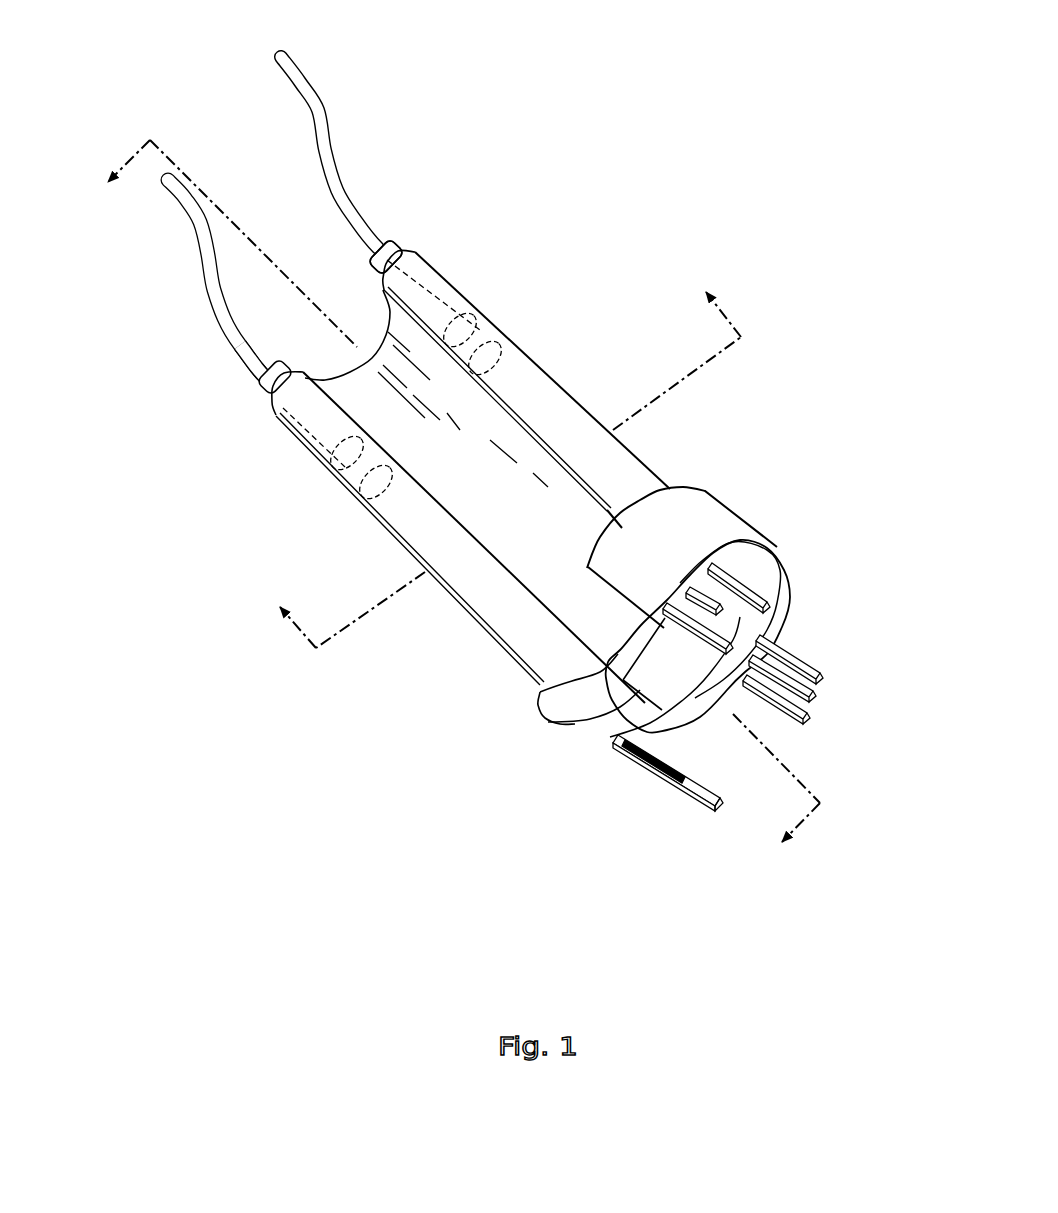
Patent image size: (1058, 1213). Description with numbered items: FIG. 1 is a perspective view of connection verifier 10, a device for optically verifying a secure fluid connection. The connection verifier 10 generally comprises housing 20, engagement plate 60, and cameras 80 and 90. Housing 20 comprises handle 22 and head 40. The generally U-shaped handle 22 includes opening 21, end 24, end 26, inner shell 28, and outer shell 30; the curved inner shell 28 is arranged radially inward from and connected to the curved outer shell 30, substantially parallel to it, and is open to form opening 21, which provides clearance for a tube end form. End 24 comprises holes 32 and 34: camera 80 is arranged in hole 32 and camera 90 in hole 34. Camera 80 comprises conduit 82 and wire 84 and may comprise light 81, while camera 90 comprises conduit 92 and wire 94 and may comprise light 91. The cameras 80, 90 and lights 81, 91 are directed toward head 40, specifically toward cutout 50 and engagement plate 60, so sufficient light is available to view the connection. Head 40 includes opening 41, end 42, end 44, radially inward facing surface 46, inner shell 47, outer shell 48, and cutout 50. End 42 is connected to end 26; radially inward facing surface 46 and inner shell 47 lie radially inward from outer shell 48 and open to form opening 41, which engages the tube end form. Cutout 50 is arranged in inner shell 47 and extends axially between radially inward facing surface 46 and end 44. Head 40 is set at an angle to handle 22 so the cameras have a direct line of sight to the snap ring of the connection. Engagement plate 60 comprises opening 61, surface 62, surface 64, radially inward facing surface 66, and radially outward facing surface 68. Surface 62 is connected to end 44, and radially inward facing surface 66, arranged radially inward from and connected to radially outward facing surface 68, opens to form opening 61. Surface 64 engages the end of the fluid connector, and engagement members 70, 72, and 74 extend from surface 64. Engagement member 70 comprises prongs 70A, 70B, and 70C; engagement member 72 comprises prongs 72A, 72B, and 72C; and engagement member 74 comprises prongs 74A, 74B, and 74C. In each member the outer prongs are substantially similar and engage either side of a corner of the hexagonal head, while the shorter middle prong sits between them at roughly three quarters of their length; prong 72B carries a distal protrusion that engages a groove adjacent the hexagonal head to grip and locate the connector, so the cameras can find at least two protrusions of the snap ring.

The connection verifier 10 is at (792, 70).
The housing 20 is at (430, 263).
The opening 21 is at (472, 476).
The handle 22 is at (300, 447).
The end 24 is at (260, 404).
The end 26 is at (528, 683).
The inner shell 28 is at (493, 423).
The outer shell 30 is at (594, 414).
The hole 32 is at (362, 273).
The hole 34 is at (297, 360).
The head 40 is at (572, 712).
The opening 41 is at (618, 702).
The end 42 is at (675, 490).
The end 44 is at (739, 536).
The radially inward facing surface 46 is at (580, 707).
The inner shell 47 is at (650, 725).
The outer shell 48 is at (703, 503).
The cutout 50 is at (630, 712).
The engagement plate 60 is at (787, 545).
The opening 61 is at (613, 745).
The surface 62 is at (753, 537).
The surface 64 is at (771, 571).
The radially inward facing surface 66 is at (713, 683).
The radially outward facing surface 68 is at (737, 700).
The engagement member 70 is at (691, 799).
The prong 70A is at (670, 780).
The prong 70B is at (688, 760).
The prong 70C is at (724, 800).
The engagement member 72 is at (828, 700).
The prong 72A is at (790, 715).
The prong 72B is at (800, 690).
The prong 72C is at (823, 680).
The engagement member 74 is at (747, 592).
The prong 74A is at (767, 592).
The prong 74B is at (707, 573).
The prong 74C is at (693, 590).
The camera 80 is at (470, 333).
The light 81 is at (497, 357).
The conduit 82 is at (392, 252).
The wire 84 is at (320, 110).
The camera 90 is at (350, 463).
The light 91 is at (362, 482).
The conduit 92 is at (267, 383).
The wire 94 is at (187, 205).